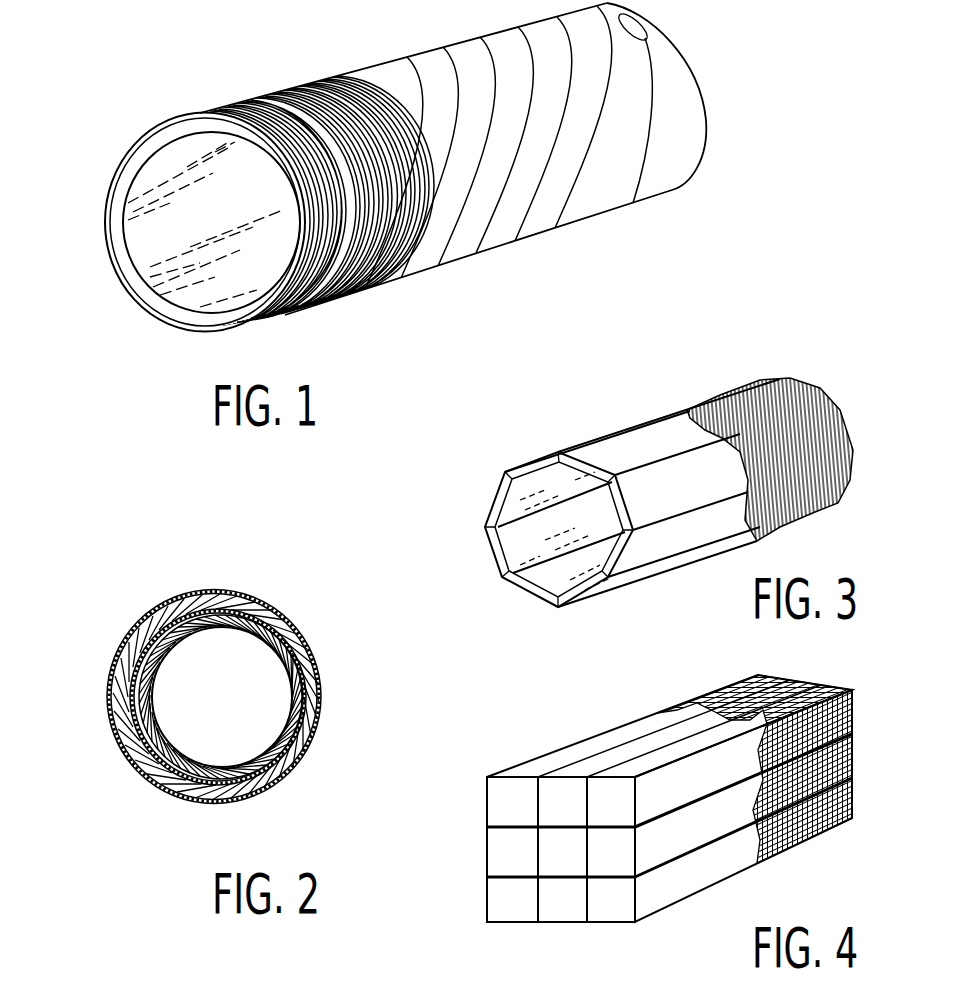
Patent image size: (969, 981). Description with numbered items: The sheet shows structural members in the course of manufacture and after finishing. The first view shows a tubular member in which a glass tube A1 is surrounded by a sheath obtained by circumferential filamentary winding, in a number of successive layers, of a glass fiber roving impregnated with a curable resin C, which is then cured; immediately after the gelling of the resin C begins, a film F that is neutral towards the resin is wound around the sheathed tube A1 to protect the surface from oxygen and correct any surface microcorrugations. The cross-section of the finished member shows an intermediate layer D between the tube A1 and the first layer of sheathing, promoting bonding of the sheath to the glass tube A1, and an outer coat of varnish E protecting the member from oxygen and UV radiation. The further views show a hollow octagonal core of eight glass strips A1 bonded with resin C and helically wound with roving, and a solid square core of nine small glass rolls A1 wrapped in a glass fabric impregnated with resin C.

In FIG. 1, the glass tube A1 is at (118, 212).
In FIG. 2, the glass tube A1 is at (277, 615).
In FIG. 3, the glass tube A1 is at (585, 467).
In FIG. 4, the glass tube A1 is at (518, 795).
In FIG. 3, the curable resin C is at (485, 515).
In FIG. 4, the curable resin C is at (505, 875).
In FIG. 1, the intermediate layer D is at (143, 135).
In FIG. 2, the intermediate layer D is at (313, 717).
In FIG. 2, the outer coat of varnish E is at (283, 767).
In FIG. 1, the film F is at (583, 205).